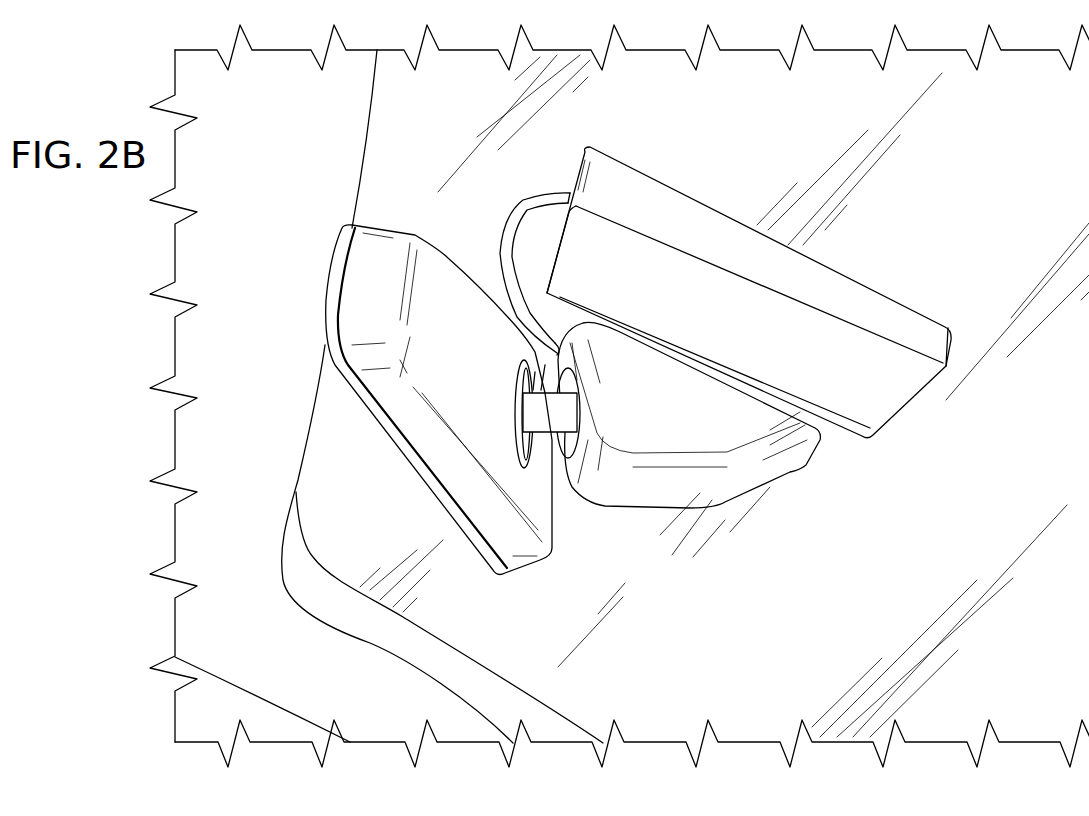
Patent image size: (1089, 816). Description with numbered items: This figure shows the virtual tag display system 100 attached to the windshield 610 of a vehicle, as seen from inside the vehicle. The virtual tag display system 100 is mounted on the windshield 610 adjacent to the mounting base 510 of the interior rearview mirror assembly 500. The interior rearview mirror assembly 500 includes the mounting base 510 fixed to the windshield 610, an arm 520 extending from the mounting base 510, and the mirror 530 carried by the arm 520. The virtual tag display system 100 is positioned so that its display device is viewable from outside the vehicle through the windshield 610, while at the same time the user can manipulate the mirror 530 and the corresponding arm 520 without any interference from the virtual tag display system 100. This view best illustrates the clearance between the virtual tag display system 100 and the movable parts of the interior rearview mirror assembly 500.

The virtual tag display system 100 is at (697, 198).
The interior rearview mirror assembly 500 is at (615, 435).
The mounting base 510 is at (780, 467).
The arm 520 is at (543, 418).
The mirror 530 is at (512, 543).
The windshield 610 is at (982, 188).